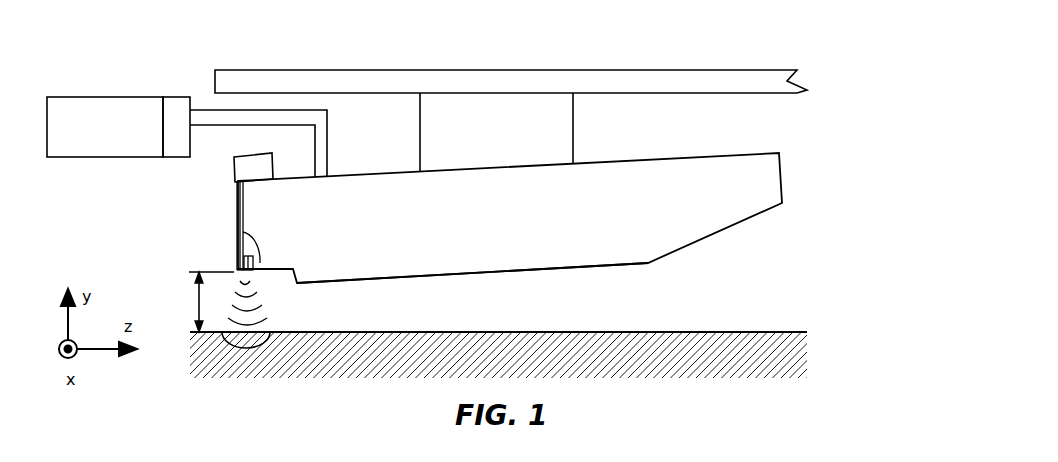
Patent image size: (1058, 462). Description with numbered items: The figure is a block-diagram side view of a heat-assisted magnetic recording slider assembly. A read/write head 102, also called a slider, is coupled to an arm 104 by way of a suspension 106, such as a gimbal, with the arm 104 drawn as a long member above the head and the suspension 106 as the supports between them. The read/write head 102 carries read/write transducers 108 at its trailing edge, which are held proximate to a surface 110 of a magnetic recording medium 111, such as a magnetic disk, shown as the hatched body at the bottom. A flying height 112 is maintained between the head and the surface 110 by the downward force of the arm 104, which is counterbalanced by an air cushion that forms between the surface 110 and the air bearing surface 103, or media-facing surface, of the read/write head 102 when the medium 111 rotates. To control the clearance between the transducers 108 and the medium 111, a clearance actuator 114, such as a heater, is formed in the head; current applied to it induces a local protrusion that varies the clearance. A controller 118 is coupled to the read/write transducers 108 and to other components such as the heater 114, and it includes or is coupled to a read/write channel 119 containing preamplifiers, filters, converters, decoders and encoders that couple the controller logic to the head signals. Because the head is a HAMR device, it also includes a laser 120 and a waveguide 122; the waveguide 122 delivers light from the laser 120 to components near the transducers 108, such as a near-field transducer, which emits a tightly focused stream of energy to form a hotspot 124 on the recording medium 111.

The read/write head 102 is at (688, 164).
The air bearing surface 103 is at (382, 283).
The arm 104 is at (733, 72).
The suspension 106 is at (574, 126).
The read/write transducers 108 is at (245, 258).
The surface 110 is at (695, 331).
The magnetic recording medium 111 is at (703, 368).
The flying height 112 is at (197, 302).
The clearance actuator 114 is at (244, 235).
The controller 118 is at (99, 97).
The read/write channel 119 is at (172, 97).
The laser 120 is at (252, 161).
The waveguide 122 is at (237, 200).
The hotspot 124 is at (263, 331).